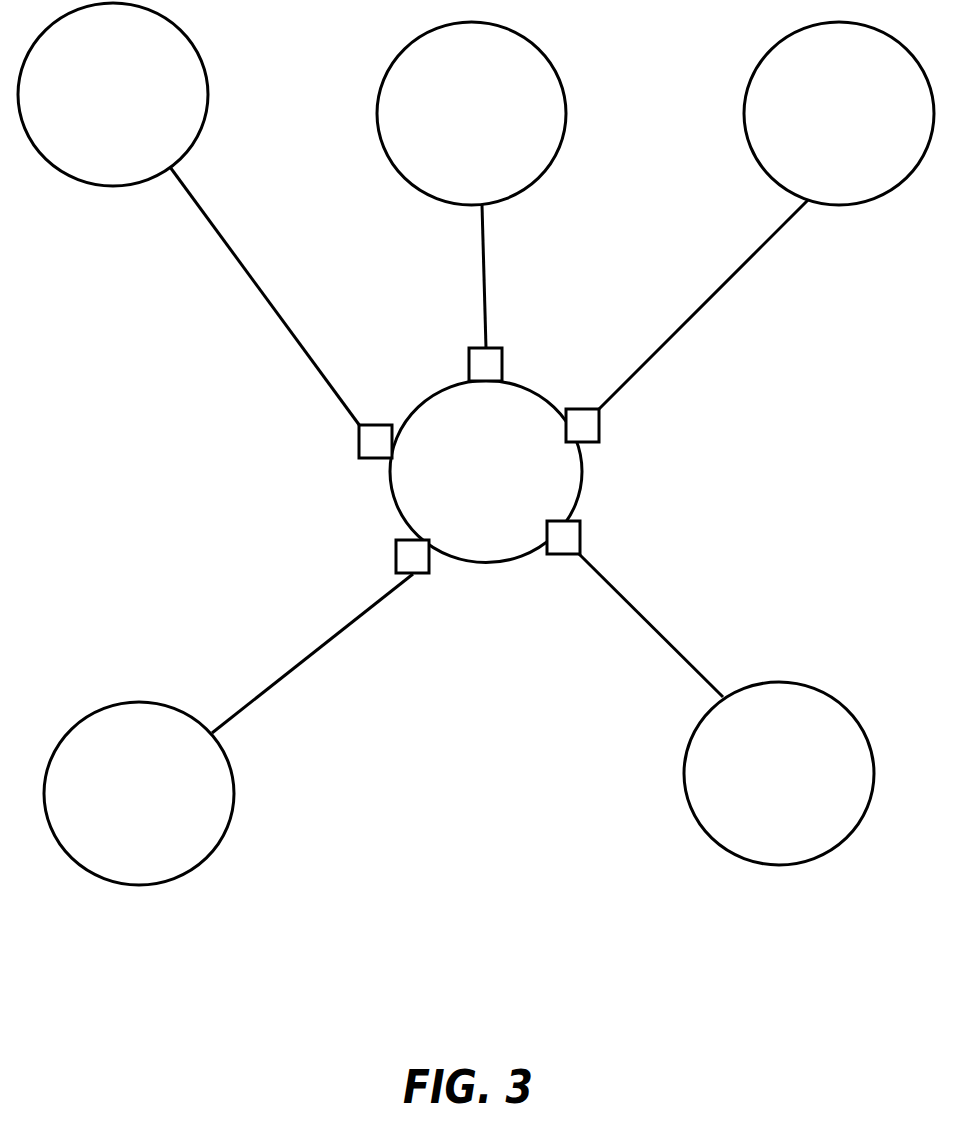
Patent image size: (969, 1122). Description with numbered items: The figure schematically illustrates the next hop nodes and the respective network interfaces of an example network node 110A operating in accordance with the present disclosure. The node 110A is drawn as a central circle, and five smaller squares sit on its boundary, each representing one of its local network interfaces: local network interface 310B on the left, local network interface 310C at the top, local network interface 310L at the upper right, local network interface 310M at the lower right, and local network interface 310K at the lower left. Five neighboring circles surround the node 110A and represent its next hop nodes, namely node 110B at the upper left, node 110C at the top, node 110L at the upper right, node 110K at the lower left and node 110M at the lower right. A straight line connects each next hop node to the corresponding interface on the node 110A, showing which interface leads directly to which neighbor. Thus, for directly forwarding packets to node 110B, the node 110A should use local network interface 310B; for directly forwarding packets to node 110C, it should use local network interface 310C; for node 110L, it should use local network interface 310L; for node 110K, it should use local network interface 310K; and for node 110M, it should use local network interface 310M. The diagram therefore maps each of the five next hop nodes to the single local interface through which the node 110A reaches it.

The node 110A is at (486, 472).
The node 110B is at (142, 106).
The node 110C is at (501, 124).
The node 110L is at (813, 124).
The node 110K is at (167, 804).
The node 110M is at (749, 786).
The local network interface 310B is at (378, 459).
The local network interface 310C is at (468, 363).
The local network interface 310L is at (600, 424).
The local network interface 310M is at (581, 535).
The local network interface 310K is at (396, 553).